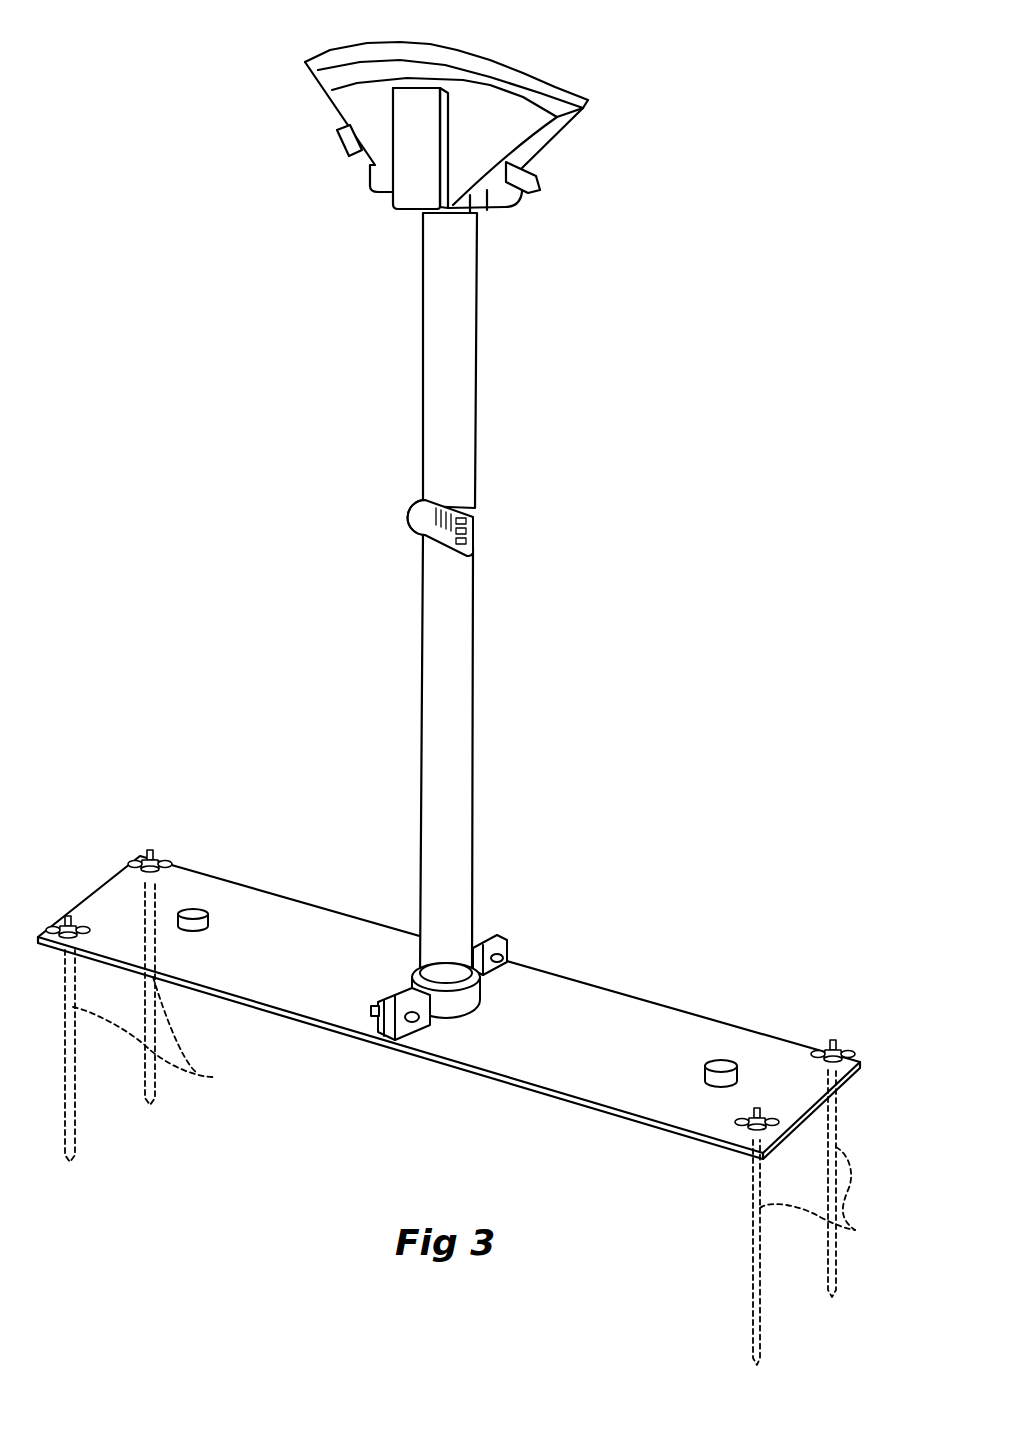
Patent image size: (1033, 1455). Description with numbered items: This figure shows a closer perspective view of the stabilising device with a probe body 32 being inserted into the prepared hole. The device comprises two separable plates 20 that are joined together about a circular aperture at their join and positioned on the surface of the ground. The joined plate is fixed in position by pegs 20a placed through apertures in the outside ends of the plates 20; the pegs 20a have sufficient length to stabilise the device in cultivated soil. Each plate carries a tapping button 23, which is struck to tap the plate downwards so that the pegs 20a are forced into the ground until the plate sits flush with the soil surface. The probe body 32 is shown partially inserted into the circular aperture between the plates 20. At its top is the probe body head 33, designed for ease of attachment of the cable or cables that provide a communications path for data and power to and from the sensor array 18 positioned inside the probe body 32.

The sensor array 18 is at (472, 527).
The separable plates 20 is at (308, 934).
The pegs 20a is at (486, 1124).
The tapping buttons 23 is at (193, 908).
The probe body 32 is at (458, 450).
The probe body head 33 is at (503, 78).